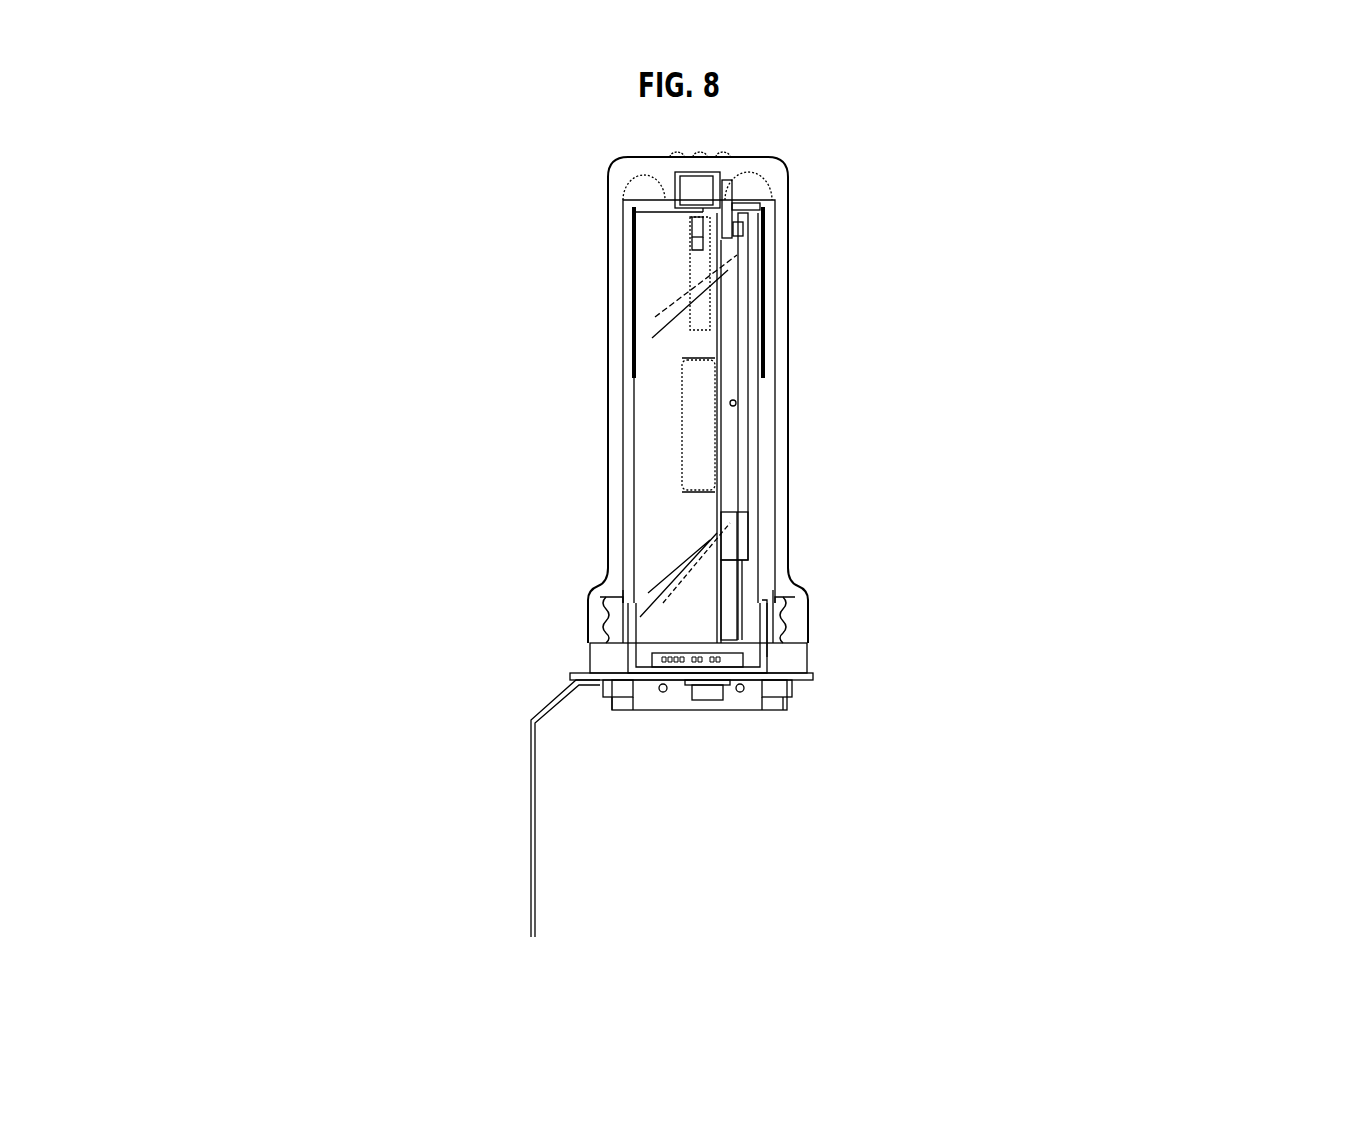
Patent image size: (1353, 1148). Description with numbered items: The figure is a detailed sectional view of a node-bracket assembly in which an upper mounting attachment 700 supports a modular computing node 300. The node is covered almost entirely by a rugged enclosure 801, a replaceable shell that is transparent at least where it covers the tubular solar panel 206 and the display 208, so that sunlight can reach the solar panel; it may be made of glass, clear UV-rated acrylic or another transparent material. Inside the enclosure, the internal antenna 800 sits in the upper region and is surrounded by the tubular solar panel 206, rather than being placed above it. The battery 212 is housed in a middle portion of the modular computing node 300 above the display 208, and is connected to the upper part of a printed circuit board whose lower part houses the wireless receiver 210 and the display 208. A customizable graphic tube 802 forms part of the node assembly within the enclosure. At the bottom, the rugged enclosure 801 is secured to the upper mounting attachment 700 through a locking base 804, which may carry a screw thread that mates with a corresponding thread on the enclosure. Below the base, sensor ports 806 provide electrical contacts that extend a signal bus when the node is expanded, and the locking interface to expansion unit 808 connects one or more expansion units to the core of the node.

The modular computing node 300 is at (833, 130).
The internal antenna 800 is at (673, 228).
The tubular solar panel 206 is at (760, 272).
The battery 212 is at (662, 366).
The rugged enclosure 801 is at (612, 432).
The wireless receiver 210 is at (760, 490).
The customizable graphic tube 802 is at (608, 512).
The display 208 is at (757, 538).
The locking base 804 is at (588, 627).
The sensor ports 806 is at (713, 683).
The upper mounting attachment 700 is at (503, 810).
The locking interface to expansion unit 808 is at (703, 717).